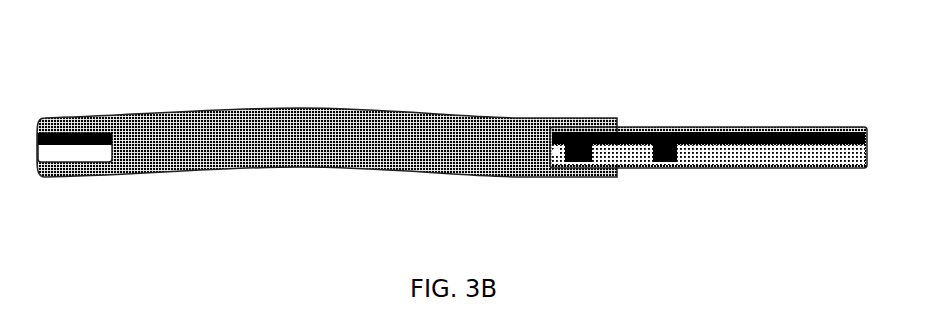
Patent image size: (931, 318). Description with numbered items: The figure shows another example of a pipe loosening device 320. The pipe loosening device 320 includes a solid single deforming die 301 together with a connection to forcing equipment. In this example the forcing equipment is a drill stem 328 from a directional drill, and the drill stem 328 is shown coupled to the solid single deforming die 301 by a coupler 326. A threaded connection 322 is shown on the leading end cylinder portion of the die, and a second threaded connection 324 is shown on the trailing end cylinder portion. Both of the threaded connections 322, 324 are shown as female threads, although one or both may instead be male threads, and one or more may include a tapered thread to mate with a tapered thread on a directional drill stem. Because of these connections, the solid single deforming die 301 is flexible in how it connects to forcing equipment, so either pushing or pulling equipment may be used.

The solid single deforming die 301 is at (256, 81).
The pipe loosening device 320 is at (590, 226).
The threaded connection 322 is at (583, 127).
The second threaded connection 324 is at (82, 157).
The coupler 326 is at (647, 127).
The drill stem 328 is at (758, 130).